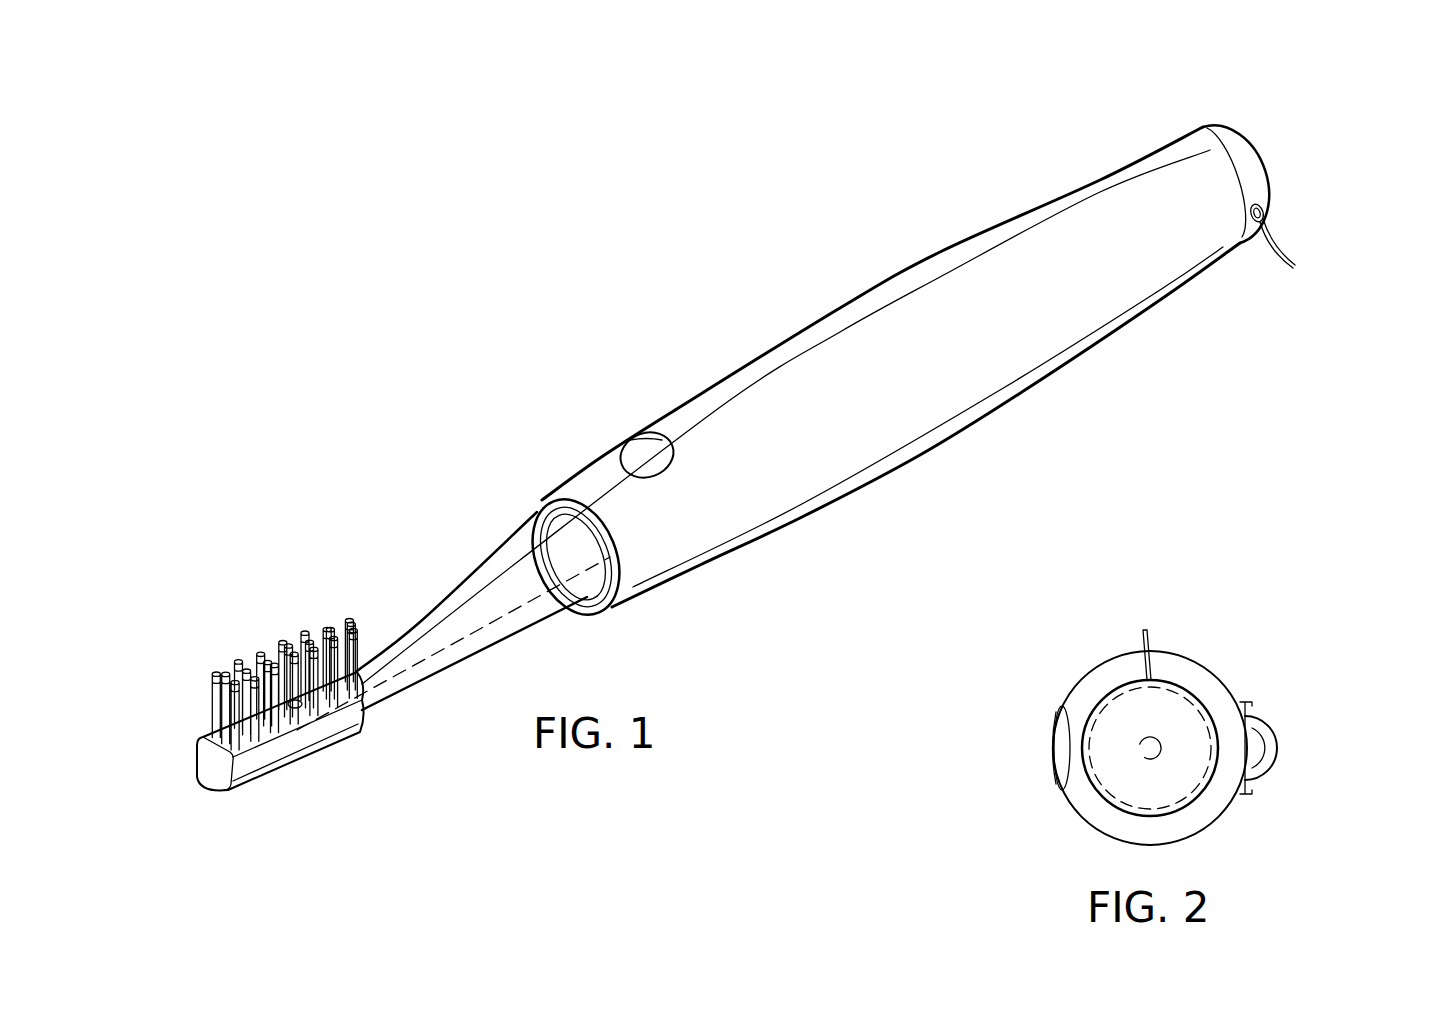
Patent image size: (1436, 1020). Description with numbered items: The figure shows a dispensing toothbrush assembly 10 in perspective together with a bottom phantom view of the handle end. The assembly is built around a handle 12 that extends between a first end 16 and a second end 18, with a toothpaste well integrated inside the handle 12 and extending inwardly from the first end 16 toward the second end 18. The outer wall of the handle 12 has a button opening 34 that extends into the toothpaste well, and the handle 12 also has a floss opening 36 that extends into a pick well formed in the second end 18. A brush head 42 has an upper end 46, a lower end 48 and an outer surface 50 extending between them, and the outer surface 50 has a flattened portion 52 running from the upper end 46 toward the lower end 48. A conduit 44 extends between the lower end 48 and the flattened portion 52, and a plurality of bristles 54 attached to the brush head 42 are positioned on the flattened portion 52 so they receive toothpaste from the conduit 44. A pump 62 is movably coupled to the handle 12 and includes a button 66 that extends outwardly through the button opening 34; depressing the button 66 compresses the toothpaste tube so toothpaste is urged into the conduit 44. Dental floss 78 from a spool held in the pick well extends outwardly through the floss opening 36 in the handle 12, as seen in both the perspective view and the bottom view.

In FIG. 1, the dispensing toothbrush assembly 10 is at (918, 230).
In FIG. 1, the handle 12 is at (832, 313).
In FIG. 2, the handle 12 is at (1088, 677).
In FIG. 1, the first end 16 is at (532, 530).
In FIG. 1, the second end 18 is at (1213, 157).
In FIG. 1, the button opening 34 is at (637, 440).
In FIG. 1, the floss opening 36 is at (1258, 213).
In FIG. 1, the brush head 42 is at (398, 702).
In FIG. 1, the conduit 44 is at (467, 630).
In FIG. 1, the upper end 46 is at (203, 773).
In FIG. 1, the lower end 48 is at (612, 557).
In FIG. 1, the outer surface 50 is at (525, 607).
In FIG. 1, the flattened portion 52 is at (260, 727).
In FIG. 1, the bristles 54 is at (323, 617).
In FIG. 2, the pump 62 is at (1288, 730).
In FIG. 1, the button 66 is at (658, 450).
In FIG. 2, the button 66 is at (1278, 750).
In FIG. 1, the dental floss 78 is at (1284, 268).
In FIG. 2, the dental floss 78 is at (1148, 634).